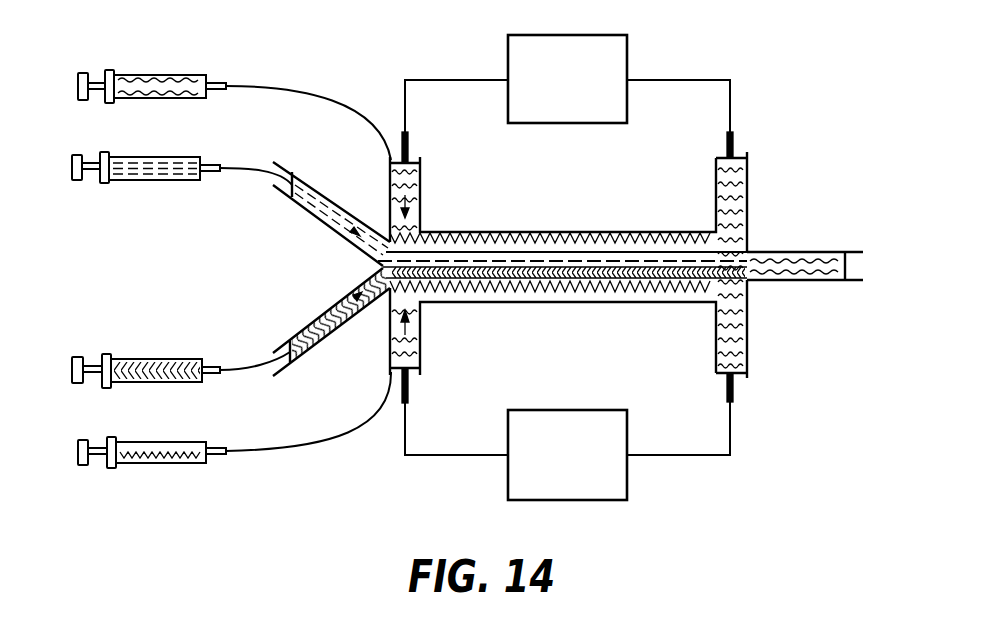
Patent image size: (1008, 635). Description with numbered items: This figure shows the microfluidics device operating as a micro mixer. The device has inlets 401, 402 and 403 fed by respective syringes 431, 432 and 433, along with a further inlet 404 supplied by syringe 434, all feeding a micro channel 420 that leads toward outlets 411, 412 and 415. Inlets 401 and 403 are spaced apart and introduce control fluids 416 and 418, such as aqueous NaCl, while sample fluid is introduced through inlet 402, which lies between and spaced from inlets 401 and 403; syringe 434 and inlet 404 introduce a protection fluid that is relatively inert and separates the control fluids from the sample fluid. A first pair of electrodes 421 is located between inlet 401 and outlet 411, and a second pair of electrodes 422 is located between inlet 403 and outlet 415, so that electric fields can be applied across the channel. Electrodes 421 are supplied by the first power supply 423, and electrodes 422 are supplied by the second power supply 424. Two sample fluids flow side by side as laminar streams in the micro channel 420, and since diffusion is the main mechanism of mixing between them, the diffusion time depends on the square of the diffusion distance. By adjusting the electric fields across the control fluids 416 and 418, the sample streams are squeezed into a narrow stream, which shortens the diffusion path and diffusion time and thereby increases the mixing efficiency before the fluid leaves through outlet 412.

The inlet 401 is at (389, 176).
The inlet 402 is at (389, 360).
The inlet 403 is at (281, 167).
The inlet 404 is at (283, 375).
The outlet 411 is at (748, 172).
The outlet 412 is at (835, 283).
The outlet 415 is at (748, 360).
The control fluid 416 is at (480, 232).
The control fluid 418 is at (569, 293).
The micro channel 420 is at (567, 233).
The first pair of electrodes 421 is at (409, 147).
The second pair of electrodes 422 is at (409, 388).
The first power supply 423 is at (627, 57).
The second power supply 424 is at (626, 476).
The syringe 431 is at (162, 75).
The syringe 432 is at (153, 181).
The syringe 433 is at (162, 464).
The syringe 434 is at (160, 358).